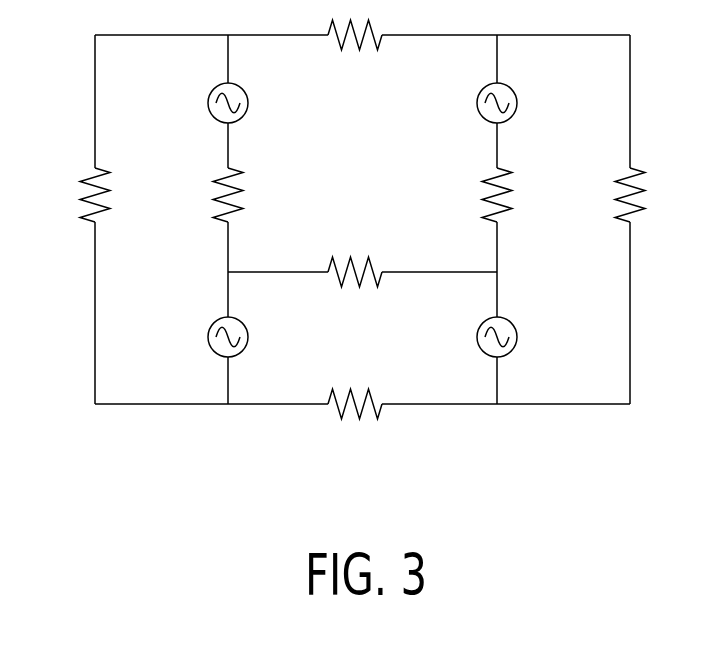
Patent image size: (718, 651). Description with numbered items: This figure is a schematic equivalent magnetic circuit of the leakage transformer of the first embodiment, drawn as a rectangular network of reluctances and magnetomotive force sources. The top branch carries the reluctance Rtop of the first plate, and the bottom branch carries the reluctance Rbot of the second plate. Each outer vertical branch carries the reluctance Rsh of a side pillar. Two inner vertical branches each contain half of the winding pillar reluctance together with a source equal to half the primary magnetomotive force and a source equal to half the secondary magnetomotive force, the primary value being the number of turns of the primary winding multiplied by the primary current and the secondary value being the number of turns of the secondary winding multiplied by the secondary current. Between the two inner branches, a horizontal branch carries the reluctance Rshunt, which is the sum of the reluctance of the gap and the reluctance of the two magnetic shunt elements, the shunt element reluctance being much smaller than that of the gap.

The reluctance of the first plate Rtop is at (355, 53).
The reluctance of the second plate Rbot is at (355, 421).
The shunt reluctance Rshunt is at (356, 289).
The reluctance of the side pillar Rsh is at (363, 195).